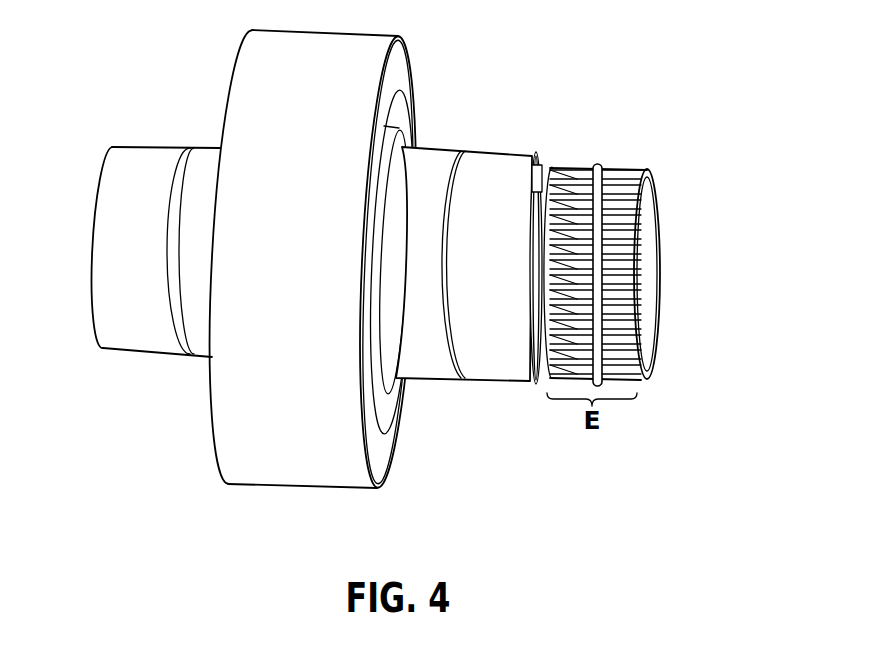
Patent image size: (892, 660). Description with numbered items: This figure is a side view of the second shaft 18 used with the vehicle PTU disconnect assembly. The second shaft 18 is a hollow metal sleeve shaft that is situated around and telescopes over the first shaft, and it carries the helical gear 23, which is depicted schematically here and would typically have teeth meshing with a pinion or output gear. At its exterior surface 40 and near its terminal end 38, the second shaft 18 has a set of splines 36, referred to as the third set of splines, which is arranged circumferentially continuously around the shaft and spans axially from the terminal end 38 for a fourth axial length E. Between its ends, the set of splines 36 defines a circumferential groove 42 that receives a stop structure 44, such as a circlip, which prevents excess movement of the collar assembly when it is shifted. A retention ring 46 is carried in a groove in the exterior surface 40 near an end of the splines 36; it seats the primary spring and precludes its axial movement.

The second shaft 18 is at (569, 234).
The helical gear 23 is at (210, 400).
The set of splines 36 is at (620, 190).
The terminal end 38 is at (604, 247).
The exterior surface 40 is at (473, 177).
The circumferential groove 42 is at (570, 252).
The stop structure 44 is at (570, 313).
The retention ring 46 is at (530, 253).